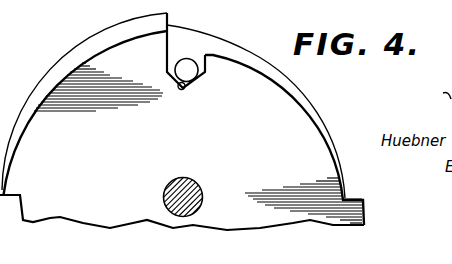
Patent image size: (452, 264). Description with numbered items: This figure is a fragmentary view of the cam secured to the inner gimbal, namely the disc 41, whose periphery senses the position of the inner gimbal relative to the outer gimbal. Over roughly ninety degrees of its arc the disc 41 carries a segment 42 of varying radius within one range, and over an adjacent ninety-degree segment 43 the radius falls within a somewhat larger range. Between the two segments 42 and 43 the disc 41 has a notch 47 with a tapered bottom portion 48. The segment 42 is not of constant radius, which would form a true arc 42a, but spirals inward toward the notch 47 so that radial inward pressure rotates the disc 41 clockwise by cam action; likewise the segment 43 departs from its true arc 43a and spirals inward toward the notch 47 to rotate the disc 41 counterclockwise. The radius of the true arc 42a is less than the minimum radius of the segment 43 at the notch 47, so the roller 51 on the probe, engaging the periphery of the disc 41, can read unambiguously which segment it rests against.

The disc 41 is at (182, 191).
The segment 42 is at (259, 71).
The true arc 42a is at (293, 80).
The segment 43 is at (121, 43).
The true arc 43a is at (100, 33).
The notch 47 is at (169, 48).
The tapered bottom portion 48 is at (183, 90).
The roller 51 is at (198, 68).